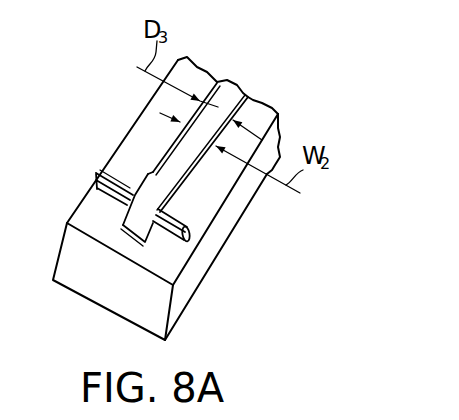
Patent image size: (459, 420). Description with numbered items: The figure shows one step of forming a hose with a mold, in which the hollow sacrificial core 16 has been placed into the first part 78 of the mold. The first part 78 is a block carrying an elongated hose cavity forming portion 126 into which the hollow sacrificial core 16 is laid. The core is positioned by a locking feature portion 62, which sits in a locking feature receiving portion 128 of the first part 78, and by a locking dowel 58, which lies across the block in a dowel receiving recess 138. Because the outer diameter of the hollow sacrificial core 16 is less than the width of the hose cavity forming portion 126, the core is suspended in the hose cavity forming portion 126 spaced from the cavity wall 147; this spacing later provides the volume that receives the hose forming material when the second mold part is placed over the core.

The hollow sacrificial core 16 is at (180, 171).
The cavity wall 147 is at (225, 227).
The first part 78 is at (182, 300).
The hose cavity forming portion 126 is at (243, 97).
The locking dowel 58 is at (97, 175).
The locking feature portion 62 is at (135, 223).
The locking feature receiving portion 128 is at (123, 223).
The dowel receiving recess 138 is at (117, 175).